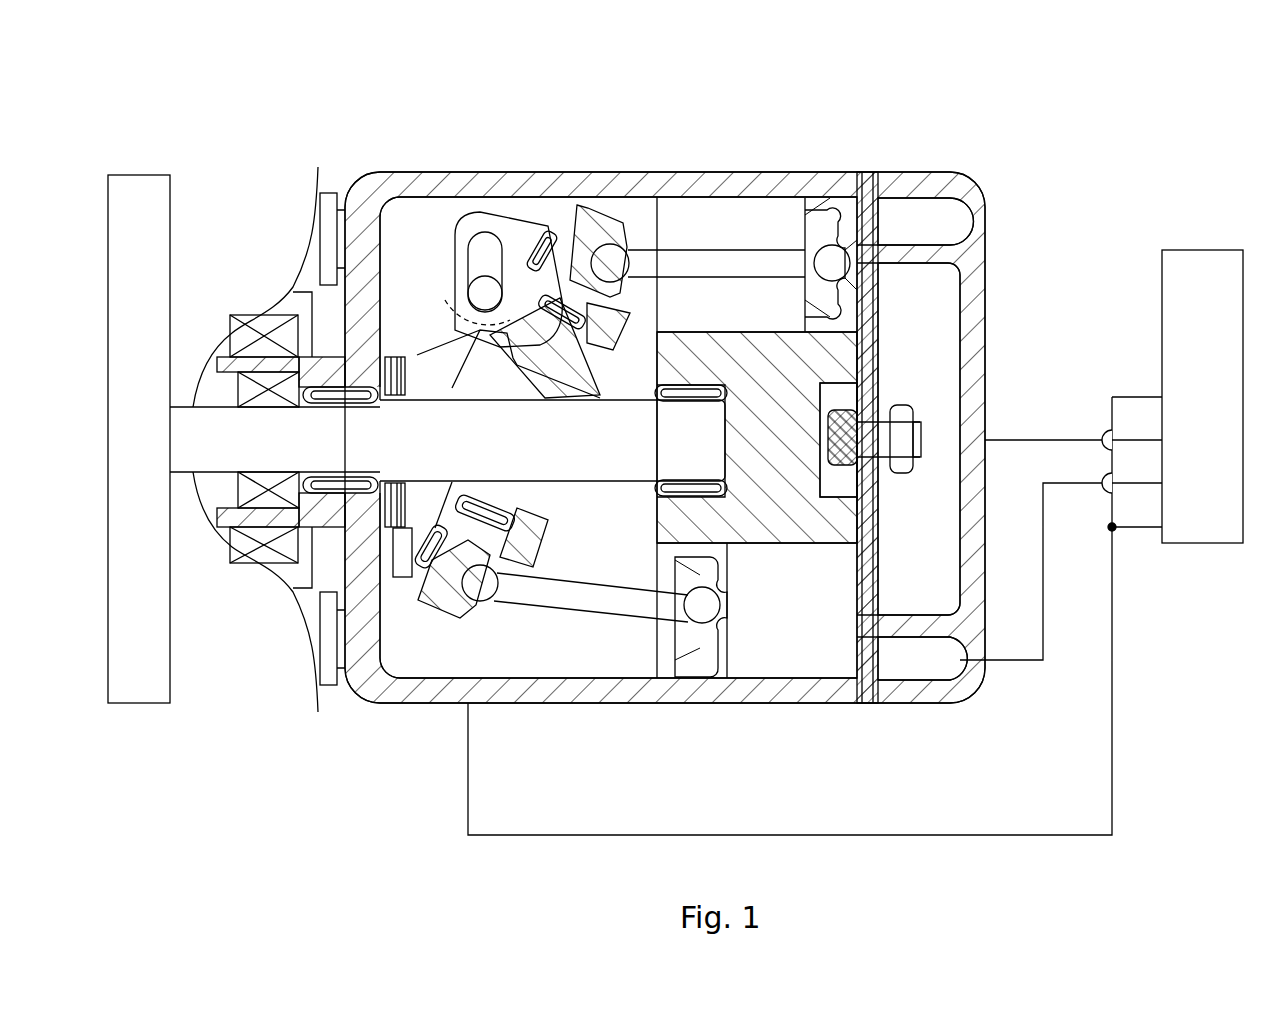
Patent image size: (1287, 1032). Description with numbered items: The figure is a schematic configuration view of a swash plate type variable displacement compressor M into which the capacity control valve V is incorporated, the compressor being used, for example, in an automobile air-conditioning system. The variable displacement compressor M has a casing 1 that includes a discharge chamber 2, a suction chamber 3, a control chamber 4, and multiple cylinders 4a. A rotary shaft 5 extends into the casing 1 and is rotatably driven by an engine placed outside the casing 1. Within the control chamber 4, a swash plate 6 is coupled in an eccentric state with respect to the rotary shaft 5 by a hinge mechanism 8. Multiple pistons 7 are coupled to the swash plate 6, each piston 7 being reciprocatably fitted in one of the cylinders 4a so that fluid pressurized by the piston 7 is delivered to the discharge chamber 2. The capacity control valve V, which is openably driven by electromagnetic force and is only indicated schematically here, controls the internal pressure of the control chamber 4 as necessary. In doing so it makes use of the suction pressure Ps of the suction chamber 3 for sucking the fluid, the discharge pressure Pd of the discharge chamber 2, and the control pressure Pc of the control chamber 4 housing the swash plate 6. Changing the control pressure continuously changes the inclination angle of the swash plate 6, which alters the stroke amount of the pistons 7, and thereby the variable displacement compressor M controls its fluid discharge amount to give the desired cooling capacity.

The casing 1 is at (390, 160).
The discharge chamber 2 is at (965, 360).
The suction chamber 3 is at (965, 222).
The control chamber 4 is at (574, 655).
The cylinders 4a is at (722, 213).
The rotary shaft 5 is at (413, 443).
The swash plate 6 is at (565, 335).
The pistons 7 is at (840, 195).
The hinge mechanism 8 is at (430, 350).
The variable displacement compressor M is at (962, 100).
The capacity control valve V is at (1203, 240).